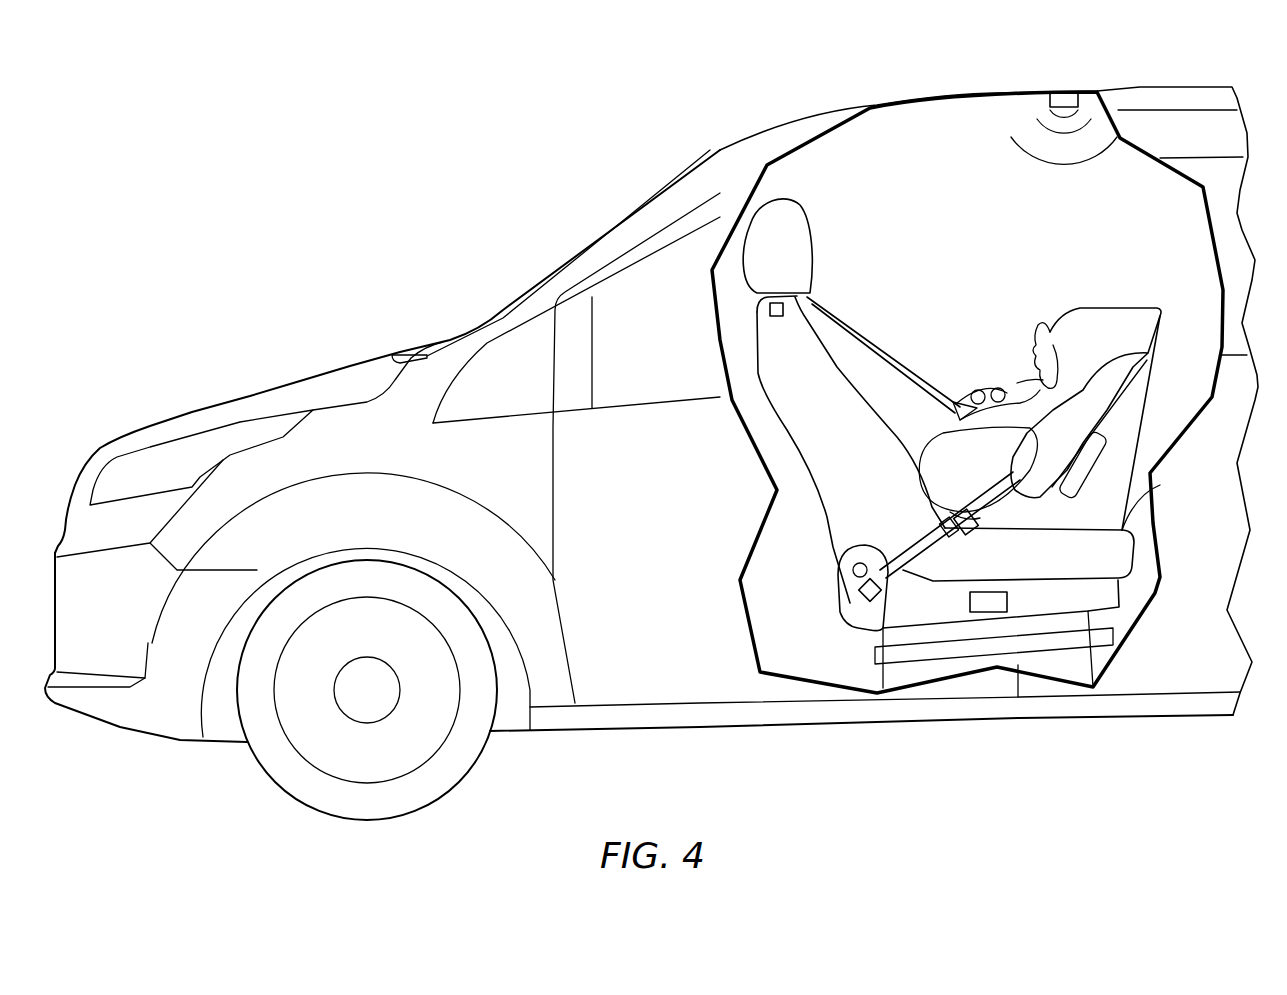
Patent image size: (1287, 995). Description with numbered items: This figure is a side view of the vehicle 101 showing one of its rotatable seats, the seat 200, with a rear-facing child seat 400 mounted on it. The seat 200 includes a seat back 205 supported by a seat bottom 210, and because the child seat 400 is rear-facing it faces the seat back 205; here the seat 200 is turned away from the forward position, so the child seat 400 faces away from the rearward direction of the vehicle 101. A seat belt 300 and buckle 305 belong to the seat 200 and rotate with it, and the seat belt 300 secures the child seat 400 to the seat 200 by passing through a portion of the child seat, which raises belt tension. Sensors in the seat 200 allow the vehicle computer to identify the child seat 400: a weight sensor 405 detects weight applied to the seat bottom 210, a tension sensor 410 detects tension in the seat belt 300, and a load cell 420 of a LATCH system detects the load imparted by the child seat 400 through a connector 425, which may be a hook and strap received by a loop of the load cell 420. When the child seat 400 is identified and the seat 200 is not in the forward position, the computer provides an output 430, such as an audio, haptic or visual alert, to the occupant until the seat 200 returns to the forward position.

The vehicle 101 is at (722, 108).
The seat 200 is at (861, 219).
The seat back 205 is at (818, 437).
The seat bottom 210 is at (1115, 545).
The seat belt 300 is at (880, 335).
The buckle 305 is at (972, 532).
The child seat 400 is at (1120, 315).
The weight sensor 405 is at (1007, 598).
The tension sensor 410 is at (766, 311).
The load cell 420 is at (865, 602).
The connector 425 is at (886, 592).
The output 430 is at (1013, 108).